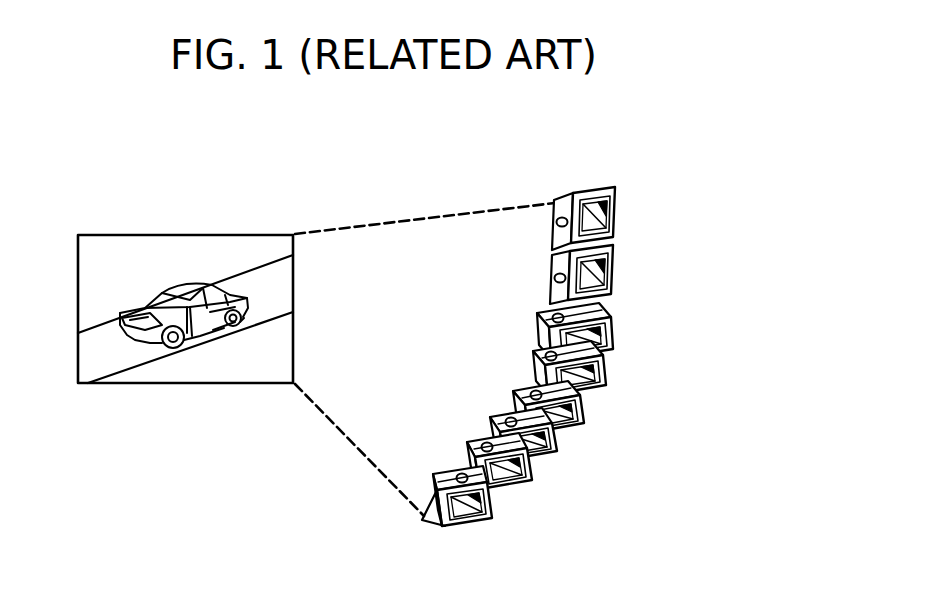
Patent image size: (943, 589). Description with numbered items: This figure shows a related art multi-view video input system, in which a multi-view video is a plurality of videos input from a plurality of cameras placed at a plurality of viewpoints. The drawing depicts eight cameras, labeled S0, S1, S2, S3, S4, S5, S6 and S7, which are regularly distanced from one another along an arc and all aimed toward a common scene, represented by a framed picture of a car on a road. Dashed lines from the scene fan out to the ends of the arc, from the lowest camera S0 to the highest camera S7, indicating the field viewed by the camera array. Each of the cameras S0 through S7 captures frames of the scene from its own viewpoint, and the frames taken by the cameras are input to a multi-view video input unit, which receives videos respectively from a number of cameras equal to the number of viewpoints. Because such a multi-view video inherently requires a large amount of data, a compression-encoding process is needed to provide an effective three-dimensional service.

The sensor S0 is at (483, 500).
The sensor S1 is at (521, 471).
The sensor S2 is at (550, 441).
The sensor S3 is at (572, 407).
The sensor S4 is at (592, 368).
The sensor S5 is at (595, 331).
The sensor S6 is at (605, 274).
The sensor S7 is at (608, 219).